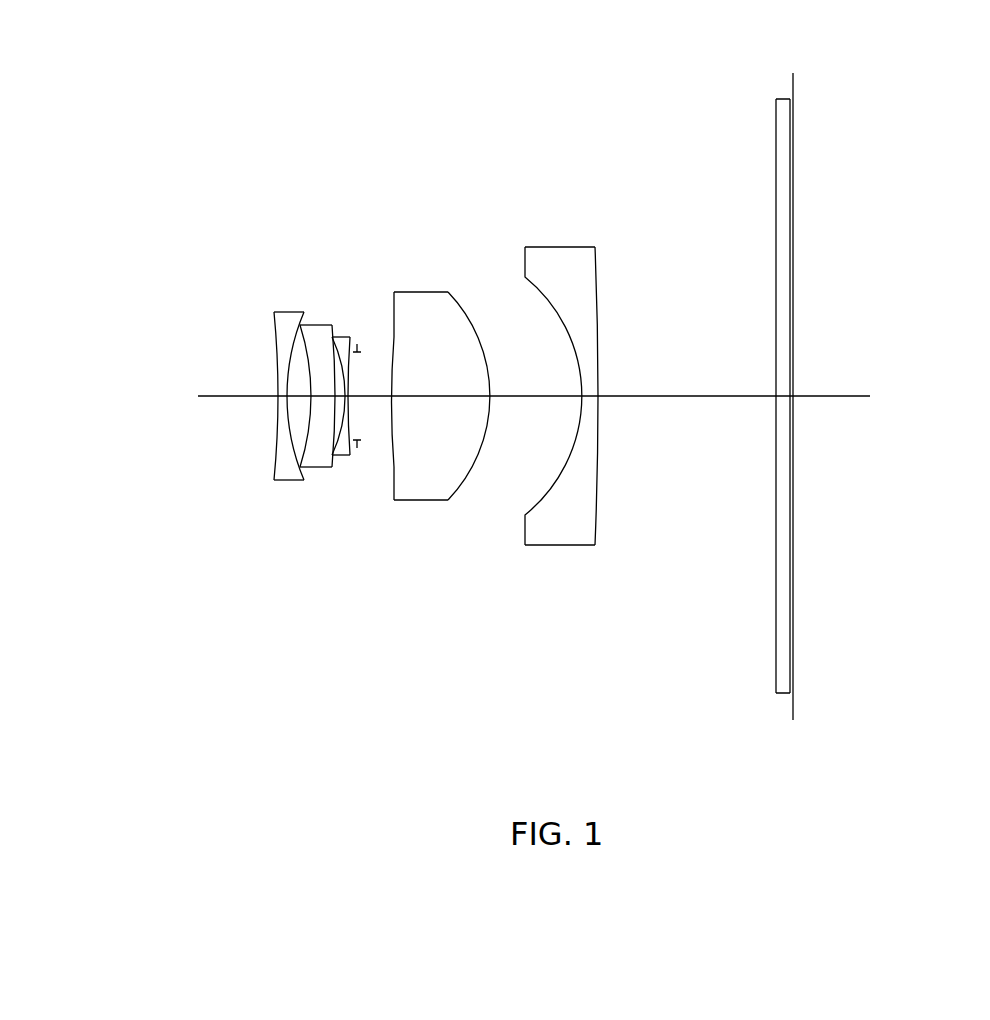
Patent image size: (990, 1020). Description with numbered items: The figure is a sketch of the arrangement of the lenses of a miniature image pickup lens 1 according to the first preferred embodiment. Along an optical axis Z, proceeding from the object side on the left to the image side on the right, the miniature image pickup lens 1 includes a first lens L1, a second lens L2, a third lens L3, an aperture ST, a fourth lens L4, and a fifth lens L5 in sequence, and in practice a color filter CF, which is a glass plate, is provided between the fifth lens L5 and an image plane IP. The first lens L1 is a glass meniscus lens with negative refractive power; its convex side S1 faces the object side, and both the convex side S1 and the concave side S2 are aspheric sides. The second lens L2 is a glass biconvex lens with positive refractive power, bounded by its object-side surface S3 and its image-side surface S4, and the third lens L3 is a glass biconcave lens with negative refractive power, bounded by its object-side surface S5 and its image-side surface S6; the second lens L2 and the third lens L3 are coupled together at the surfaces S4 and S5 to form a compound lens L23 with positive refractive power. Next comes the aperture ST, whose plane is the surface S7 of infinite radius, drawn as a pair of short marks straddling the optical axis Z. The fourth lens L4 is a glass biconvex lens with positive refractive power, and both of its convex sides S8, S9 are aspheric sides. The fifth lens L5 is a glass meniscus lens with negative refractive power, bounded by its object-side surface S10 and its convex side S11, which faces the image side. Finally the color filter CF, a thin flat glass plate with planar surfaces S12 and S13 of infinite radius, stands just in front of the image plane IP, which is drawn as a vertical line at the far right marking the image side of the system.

The miniature image pickup lens 1 is at (123, 174).
The optical axis Z is at (232, 397).
The first lens L1 is at (260, 409).
The second lens L2 is at (305, 396).
The third lens L3 is at (336, 395).
The compound lens L23 is at (316, 415).
The fourth lens L4 is at (440, 424).
The fifth lens L5 is at (589, 422).
The aperture ST is at (371, 389).
The convex side of the first lens S1 is at (270, 343).
The concave side of the first lens S2 is at (295, 360).
The object-side surface of the second lens S3 is at (305, 327).
The coupling side of the second lens S4 is at (330, 333).
The object-side surface of the third lens S5 is at (337, 331).
The image-side surface of the third lens S6 is at (347, 340).
The aperture surface S7 is at (357, 345).
The convex side of the fourth lens S8 is at (394, 337).
The convex side of the fourth lens S9 is at (467, 313).
The object-side surface of the fifth lens S10 is at (548, 300).
The convex side of the fifth lens S11 is at (598, 293).
The object-side surface of the color filter S12 is at (775, 127).
The image-side surface of the color filter S13 is at (790, 110).
The color filter CF is at (768, 406).
The image plane IP is at (794, 706).